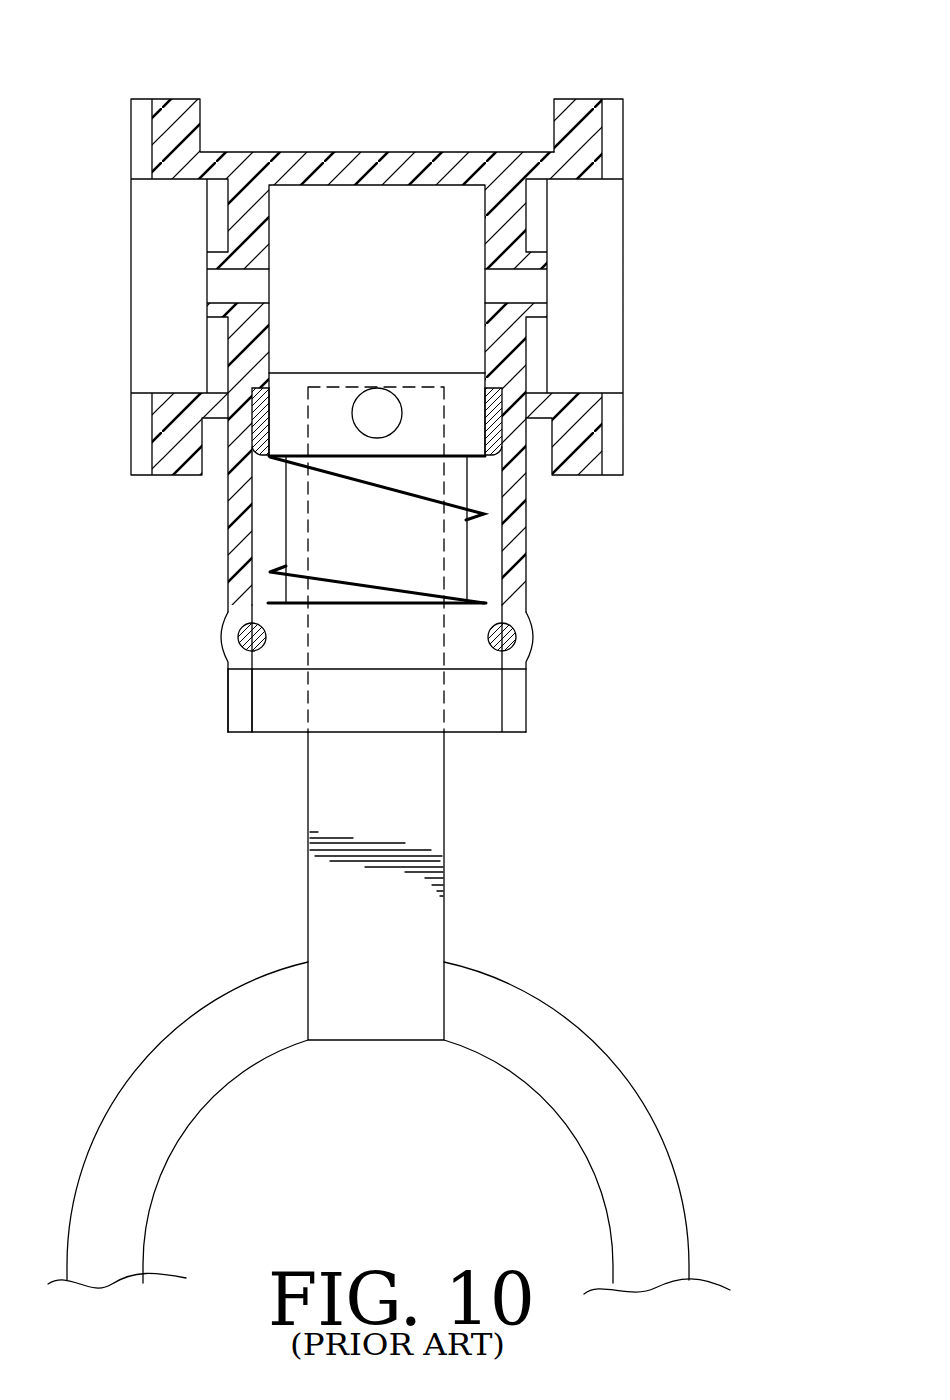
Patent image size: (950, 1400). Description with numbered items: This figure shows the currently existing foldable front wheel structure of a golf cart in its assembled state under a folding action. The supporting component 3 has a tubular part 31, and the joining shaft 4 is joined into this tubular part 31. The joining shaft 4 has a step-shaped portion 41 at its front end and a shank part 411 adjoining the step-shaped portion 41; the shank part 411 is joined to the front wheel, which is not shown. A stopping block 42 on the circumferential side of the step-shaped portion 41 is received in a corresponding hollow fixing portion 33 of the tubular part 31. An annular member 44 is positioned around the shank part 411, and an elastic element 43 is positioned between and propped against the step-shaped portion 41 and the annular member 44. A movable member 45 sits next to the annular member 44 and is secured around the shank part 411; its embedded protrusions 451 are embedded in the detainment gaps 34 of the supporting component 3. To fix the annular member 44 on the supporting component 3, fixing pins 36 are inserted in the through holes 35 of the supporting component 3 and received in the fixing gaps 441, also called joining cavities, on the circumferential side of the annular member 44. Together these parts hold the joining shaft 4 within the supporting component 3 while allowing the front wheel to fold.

The supporting component 3 is at (586, 112).
The tubular part 31 is at (484, 515).
The hollow fixing portion 33 is at (498, 447).
The detainment gap 34 is at (176, 724).
The through hole 35 is at (234, 646).
The fixing pin 36 is at (518, 628).
The joining shaft 4 is at (293, 862).
The step-shaped portion 41 is at (417, 380).
The shank part 411 is at (428, 913).
The stopping block 42 is at (252, 452).
The elastic element 43 is at (518, 560).
The annular member 44 is at (470, 665).
The fixing gap 441 is at (246, 620).
The movable member 45 is at (470, 720).
The embedded protrusion 451 is at (243, 722).